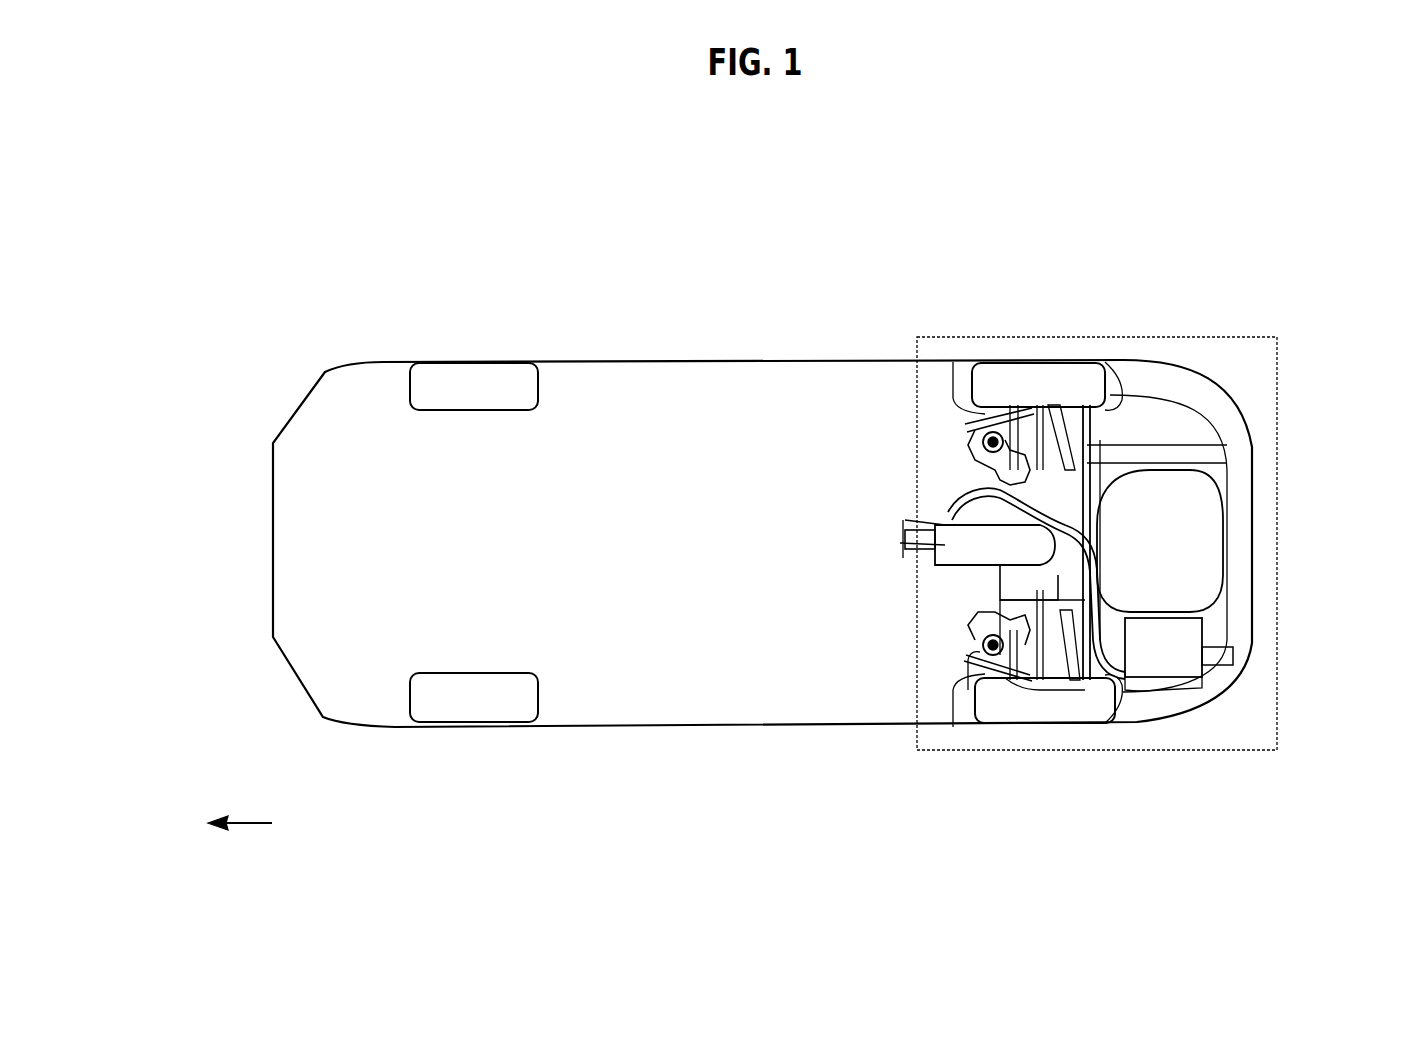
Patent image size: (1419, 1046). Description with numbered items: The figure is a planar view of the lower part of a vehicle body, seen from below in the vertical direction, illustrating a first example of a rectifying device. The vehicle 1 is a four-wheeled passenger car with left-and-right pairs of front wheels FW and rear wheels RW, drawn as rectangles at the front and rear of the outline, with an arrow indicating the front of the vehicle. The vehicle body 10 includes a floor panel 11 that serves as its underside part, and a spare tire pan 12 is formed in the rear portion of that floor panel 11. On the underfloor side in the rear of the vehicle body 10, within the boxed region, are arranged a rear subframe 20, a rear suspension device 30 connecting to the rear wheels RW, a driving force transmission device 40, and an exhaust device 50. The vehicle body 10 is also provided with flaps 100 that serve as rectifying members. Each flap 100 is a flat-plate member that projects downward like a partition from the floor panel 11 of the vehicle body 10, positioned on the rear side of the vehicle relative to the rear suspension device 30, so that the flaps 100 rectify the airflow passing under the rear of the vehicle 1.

The vehicle 1 is at (288, 375).
The vehicle body 10 is at (376, 364).
The floor panel 11 is at (900, 462).
The spare tire pan 12 is at (1178, 540).
The rear subframe 20 is at (1028, 478).
The rear suspension device 30 is at (987, 672).
The driving force transmission device 40 is at (1008, 570).
The exhaust device 50 is at (1148, 685).
The flap 100 is at (1105, 585).
The front wheel FW is at (447, 718).
The rear wheel RW is at (1048, 722).